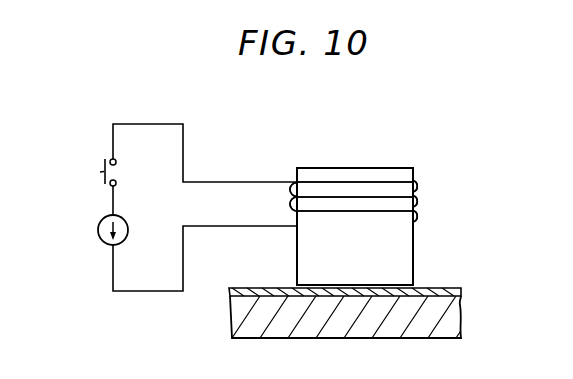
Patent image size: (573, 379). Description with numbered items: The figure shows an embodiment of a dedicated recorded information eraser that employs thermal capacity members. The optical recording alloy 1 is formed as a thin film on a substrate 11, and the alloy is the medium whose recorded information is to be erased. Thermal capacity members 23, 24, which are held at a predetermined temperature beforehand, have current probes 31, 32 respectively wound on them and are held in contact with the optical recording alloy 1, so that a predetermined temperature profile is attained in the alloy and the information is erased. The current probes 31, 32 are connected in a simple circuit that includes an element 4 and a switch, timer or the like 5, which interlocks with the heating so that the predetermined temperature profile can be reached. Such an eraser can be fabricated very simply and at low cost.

The optical recording alloy 1 is at (462, 289).
The substrate 11 is at (462, 322).
The current source 4 is at (99, 224).
The switch, timer or the like 5 is at (100, 172).
The thermal capacity member 23 is at (413, 253).
The thermal capacity member 24 is at (403, 226).
The current probe 31 is at (416, 183).
The current probe 32 is at (400, 189).